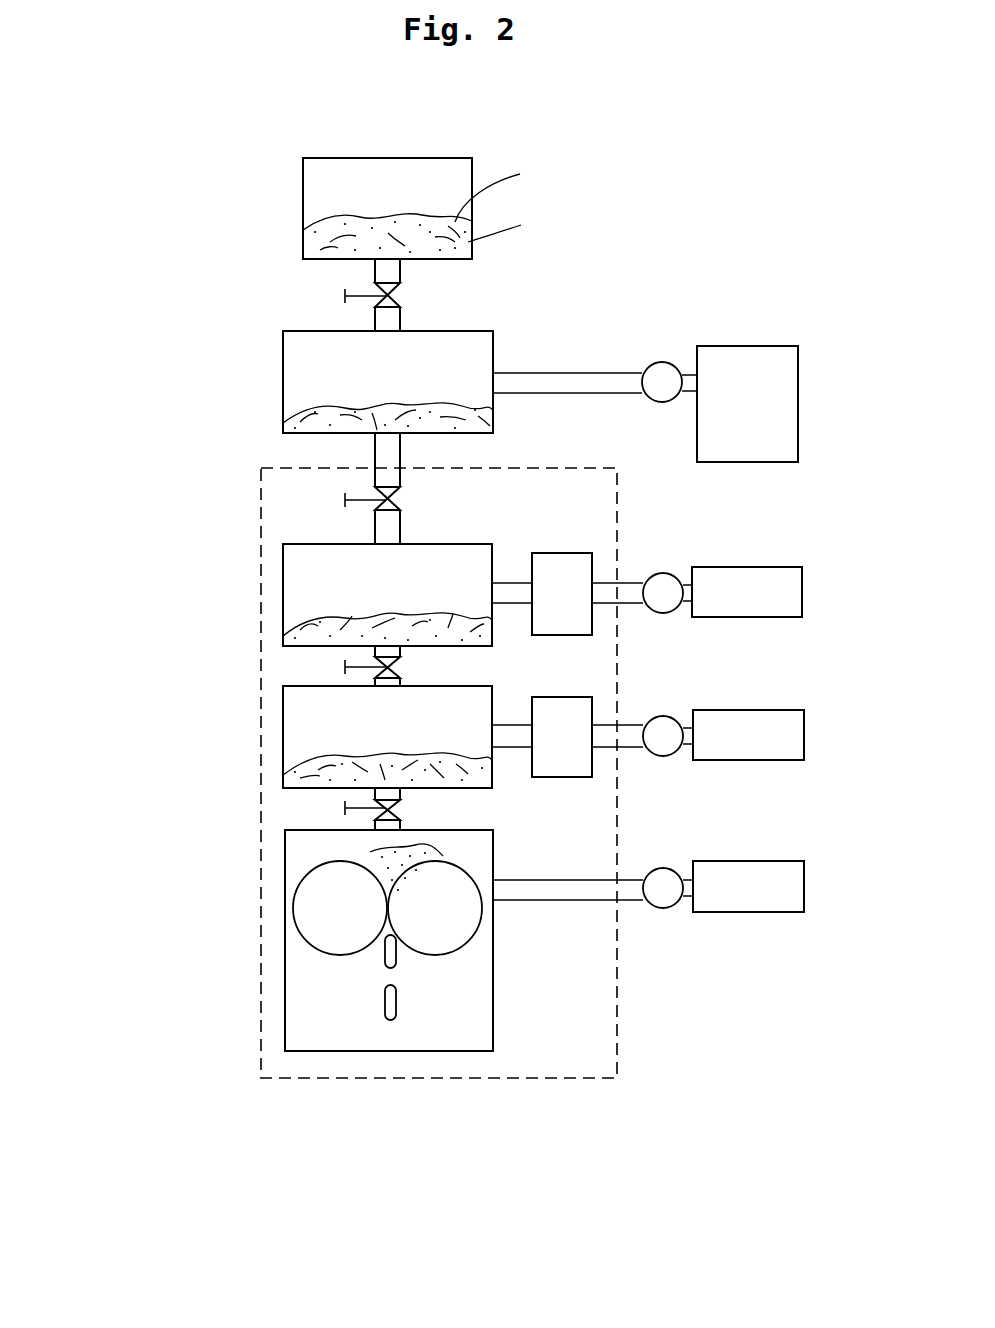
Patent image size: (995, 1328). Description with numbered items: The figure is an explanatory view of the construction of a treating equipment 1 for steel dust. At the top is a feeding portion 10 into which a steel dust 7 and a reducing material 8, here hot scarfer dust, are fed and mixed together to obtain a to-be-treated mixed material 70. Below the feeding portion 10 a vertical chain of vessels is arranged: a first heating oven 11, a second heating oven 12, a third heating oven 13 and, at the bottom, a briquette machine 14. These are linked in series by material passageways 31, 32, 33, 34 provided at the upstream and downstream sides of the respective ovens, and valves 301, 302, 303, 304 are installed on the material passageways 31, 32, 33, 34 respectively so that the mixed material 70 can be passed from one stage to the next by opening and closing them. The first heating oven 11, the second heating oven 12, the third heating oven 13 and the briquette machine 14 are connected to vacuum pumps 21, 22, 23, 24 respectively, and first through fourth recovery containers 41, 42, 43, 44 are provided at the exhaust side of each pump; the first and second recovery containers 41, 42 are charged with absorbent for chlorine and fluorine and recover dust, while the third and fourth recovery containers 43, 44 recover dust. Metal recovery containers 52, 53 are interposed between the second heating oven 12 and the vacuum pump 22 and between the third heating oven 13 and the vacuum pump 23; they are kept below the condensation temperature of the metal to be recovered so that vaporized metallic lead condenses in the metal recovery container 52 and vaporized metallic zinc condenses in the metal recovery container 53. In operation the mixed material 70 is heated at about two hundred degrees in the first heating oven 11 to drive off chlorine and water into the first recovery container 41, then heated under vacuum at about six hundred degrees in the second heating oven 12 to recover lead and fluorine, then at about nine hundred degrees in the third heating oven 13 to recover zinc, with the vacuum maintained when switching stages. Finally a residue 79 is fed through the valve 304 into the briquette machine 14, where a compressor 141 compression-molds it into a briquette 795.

The treating equipment 1 is at (686, 182).
The steel dust 7 is at (562, 228).
The reducing material 8 is at (547, 182).
The feeding portion 10 is at (303, 206).
The first heating oven 11 is at (283, 366).
The second heating oven 12 is at (283, 585).
The third heating oven 13 is at (283, 745).
The briquette machine 14 is at (274, 968).
The vacuum pump 21 is at (664, 362).
The vacuum pump 22 is at (655, 573).
The vacuum pump 23 is at (665, 714).
The vacuum pump 24 is at (677, 868).
The material passageway 31 is at (393, 273).
The material passageway 32 is at (390, 450).
The material passageway 33 is at (390, 652).
The material passageway 34 is at (392, 793).
The first recovery container 41 is at (715, 463).
The second recovery container 42 is at (775, 567).
The third recovery container 43 is at (760, 710).
The fourth recovery container 44 is at (768, 965).
The metal recovery container 52 is at (592, 634).
The metal recovery container 53 is at (592, 776).
The to-be-treated mixed material 70 is at (287, 632).
The residue 79 is at (380, 863).
The compressor 141 is at (338, 935).
The valve 301 is at (346, 287).
The valve 302 is at (345, 487).
The valve 303 is at (345, 655).
The valve 304 is at (345, 800).
The briquette 795 is at (385, 1003).